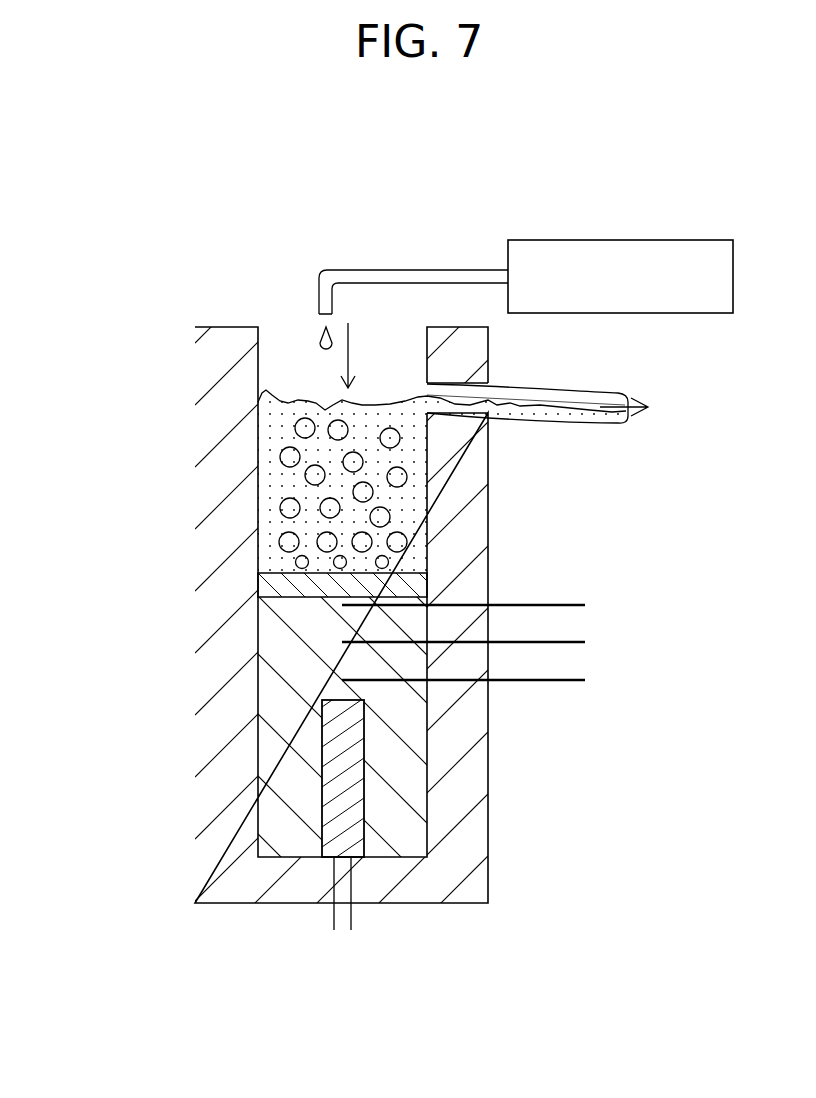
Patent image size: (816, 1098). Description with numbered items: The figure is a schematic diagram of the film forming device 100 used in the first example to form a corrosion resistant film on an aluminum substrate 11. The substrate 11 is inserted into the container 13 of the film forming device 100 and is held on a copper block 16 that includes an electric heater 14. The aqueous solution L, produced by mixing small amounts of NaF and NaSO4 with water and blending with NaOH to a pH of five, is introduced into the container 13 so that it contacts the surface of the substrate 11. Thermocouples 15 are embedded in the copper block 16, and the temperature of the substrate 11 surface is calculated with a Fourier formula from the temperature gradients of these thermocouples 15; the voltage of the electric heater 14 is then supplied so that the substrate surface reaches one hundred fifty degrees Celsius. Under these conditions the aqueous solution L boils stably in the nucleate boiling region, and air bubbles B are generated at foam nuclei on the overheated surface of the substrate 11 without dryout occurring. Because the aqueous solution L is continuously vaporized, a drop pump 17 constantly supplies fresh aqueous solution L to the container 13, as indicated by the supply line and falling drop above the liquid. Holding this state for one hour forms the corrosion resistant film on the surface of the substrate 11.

The film forming device 100 is at (99, 220).
The drop pump 17 is at (613, 240).
The aqueous solution L is at (286, 412).
The air bubbles B is at (400, 542).
The substrate 11 is at (405, 588).
The container 13 is at (447, 728).
The thermocouples 15 is at (585, 595).
The copper block 16 is at (403, 778).
The electric heater 14 is at (355, 813).